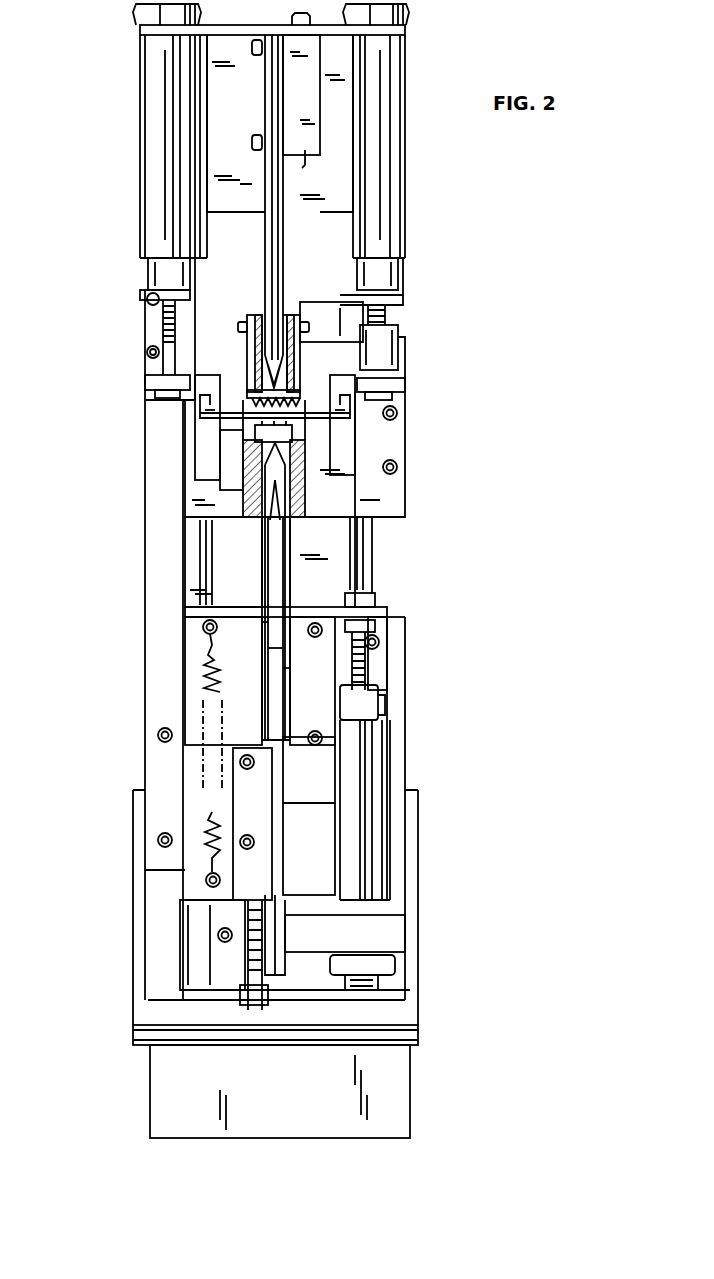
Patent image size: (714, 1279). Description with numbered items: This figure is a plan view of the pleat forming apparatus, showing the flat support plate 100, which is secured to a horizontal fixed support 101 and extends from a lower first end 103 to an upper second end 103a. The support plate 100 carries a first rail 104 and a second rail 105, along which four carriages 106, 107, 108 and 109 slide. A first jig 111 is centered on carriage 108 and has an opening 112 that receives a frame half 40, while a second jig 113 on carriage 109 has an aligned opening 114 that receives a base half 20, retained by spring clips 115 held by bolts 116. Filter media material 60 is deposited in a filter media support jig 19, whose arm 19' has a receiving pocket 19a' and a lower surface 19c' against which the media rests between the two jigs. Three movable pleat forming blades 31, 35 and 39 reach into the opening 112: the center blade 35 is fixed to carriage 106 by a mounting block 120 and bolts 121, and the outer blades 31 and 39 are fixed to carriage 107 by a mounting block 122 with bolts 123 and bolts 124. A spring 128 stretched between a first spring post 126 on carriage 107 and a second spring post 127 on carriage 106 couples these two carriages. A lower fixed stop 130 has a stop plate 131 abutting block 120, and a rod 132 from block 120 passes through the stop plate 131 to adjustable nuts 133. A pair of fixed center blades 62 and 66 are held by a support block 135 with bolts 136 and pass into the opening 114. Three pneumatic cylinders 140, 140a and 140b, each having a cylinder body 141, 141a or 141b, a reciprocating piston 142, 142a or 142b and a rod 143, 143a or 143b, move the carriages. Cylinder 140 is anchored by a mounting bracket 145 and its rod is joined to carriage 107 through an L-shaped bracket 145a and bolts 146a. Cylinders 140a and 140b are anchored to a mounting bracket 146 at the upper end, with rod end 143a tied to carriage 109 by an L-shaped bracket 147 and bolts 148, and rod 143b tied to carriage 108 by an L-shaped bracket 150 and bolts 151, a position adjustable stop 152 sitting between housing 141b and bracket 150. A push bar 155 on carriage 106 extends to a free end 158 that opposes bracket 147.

The upper second end 103a is at (418, 13).
The mounting bracket 146 is at (140, 28).
The cylinder body 141a is at (147, 105).
The pneumatic cylinder 140a is at (165, 143).
The cylinder housing 141b is at (405, 105).
The pneumatic cylinder 140b is at (385, 172).
The bolts 136 is at (255, 135).
The support block 135 is at (305, 157).
The fixed center blade 62 is at (265, 226).
The fixed center blade 66 is at (280, 228).
The second jig 113 is at (288, 315).
The bolts 116 is at (242, 324).
The spring clips 115 is at (247, 345).
The opening 114 is at (268, 350).
The base half 20 is at (250, 391).
The carriage 109 is at (400, 290).
The piston 142b is at (385, 312).
The piston rod 143b is at (385, 323).
The position adjustable stop 152 is at (382, 352).
The L-shaped bracket 150 is at (395, 385).
The bolts 148 is at (148, 298).
The piston 142a is at (162, 318).
The rod end 143a is at (165, 332).
The L-shaped bracket 147 is at (145, 380).
The push bar 155 is at (145, 530).
The free end 158 is at (145, 415).
The filter media support jig 19 is at (216, 453).
The lower surface 19c' is at (149, 405).
The filter media material receiving pocket 19a' is at (150, 424).
The arm 19' is at (162, 427).
The filter media material 60 is at (220, 432).
The frame half 40 is at (292, 433).
The bolts 151 is at (397, 413).
The carriage 108 is at (405, 497).
The first jig 111 is at (240, 512).
The opening 112 is at (262, 527).
The first rail 104 is at (185, 575).
The support plate 100 is at (374, 550).
The second rail 105 is at (374, 570).
The carriage 107 is at (405, 710).
The bolts 124 is at (240, 626).
The first spring post 126 is at (203, 628).
The spring 128 is at (205, 680).
The mounting block 122 is at (300, 614).
The bolts 123 is at (315, 730).
The outer pleat forming blade 31 is at (262, 626).
The center blade 35 is at (270, 649).
The outer pleat forming blade 39 is at (283, 668).
The L-shaped bracket 145a is at (375, 626).
The bolts 146a is at (379, 642).
The rod 143 is at (365, 661).
The reciprocating piston 142 is at (360, 676).
The cylinder body 141 is at (378, 748).
The pneumatic cylinder 140 is at (382, 765).
The second spring post 127 is at (206, 880).
The bolts 121 is at (247, 835).
The mounting block 120 is at (250, 866).
The stop plate 131 is at (262, 905).
The carriage 106 is at (418, 868).
The lower fixed stop 130 is at (295, 938).
The rod 132 is at (255, 1012).
The stop plate engaging nuts 133 is at (268, 996).
The mounting bracket 145 is at (390, 935).
The horizontal fixed support 101 is at (133, 1020).
The lower first end 103 is at (218, 1006).